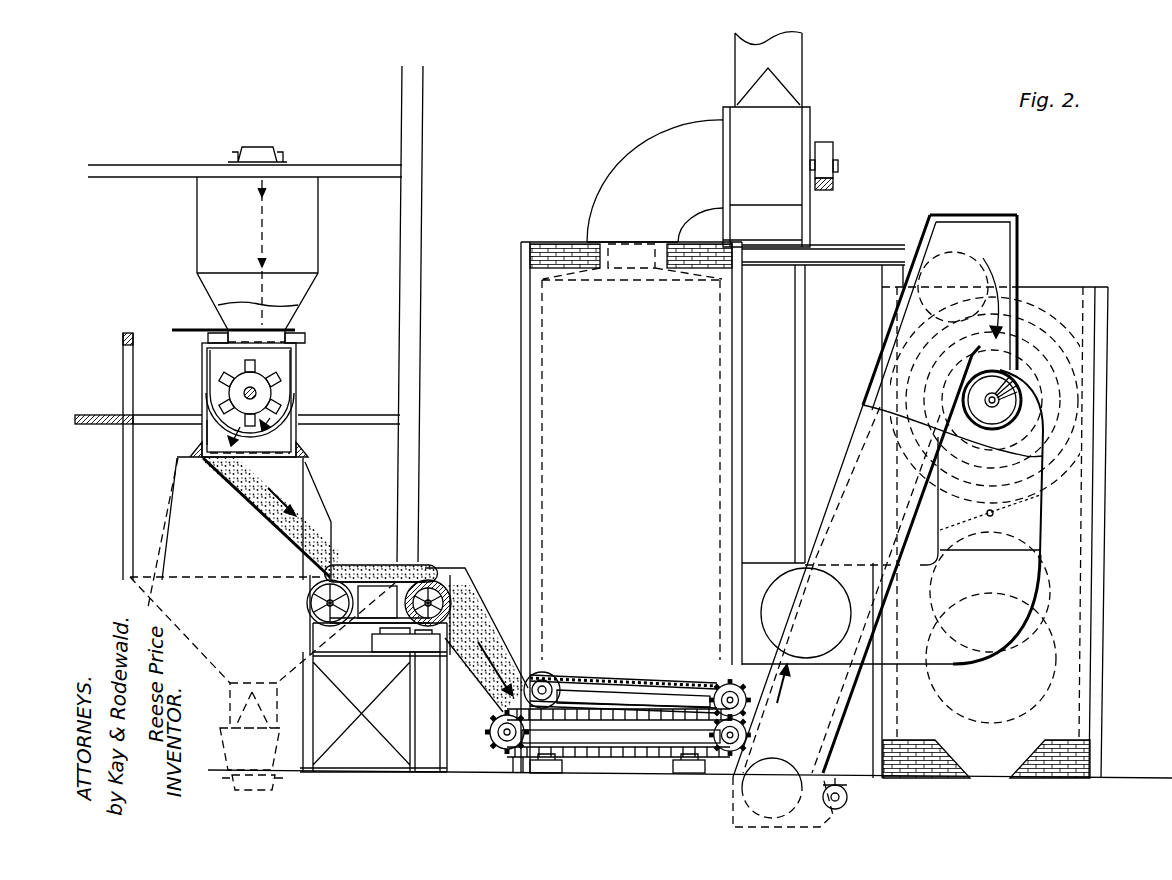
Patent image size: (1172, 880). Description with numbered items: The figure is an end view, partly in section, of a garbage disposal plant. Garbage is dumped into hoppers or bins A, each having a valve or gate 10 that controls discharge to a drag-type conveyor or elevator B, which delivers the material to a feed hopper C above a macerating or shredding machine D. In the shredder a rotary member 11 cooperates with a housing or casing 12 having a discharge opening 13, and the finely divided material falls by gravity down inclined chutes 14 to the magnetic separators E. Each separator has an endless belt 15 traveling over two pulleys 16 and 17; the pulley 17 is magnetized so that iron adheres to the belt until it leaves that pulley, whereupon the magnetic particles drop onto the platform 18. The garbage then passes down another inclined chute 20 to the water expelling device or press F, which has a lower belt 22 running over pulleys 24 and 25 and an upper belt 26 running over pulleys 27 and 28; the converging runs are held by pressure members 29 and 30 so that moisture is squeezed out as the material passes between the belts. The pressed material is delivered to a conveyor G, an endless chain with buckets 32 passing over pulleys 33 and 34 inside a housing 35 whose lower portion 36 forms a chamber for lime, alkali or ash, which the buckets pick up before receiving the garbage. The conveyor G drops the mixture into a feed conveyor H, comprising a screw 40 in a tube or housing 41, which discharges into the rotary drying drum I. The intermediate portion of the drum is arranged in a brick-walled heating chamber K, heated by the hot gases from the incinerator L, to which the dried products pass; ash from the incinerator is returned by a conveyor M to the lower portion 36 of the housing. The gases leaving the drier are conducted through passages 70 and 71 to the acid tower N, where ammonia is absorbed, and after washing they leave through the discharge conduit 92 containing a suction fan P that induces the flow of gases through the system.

The conveyor or elevator B is at (263, 155).
The feed hopper C is at (318, 250).
The macerating or shredding machine D is at (285, 365).
The rotary member 11 is at (262, 392).
The housing or casing 12 is at (267, 433).
The discharge opening 13 is at (237, 422).
The inclined chute 14 is at (270, 524).
The hopper or bin A is at (147, 607).
The magnetic separator E is at (355, 557).
The endless belt 15 is at (408, 568).
The wheel or pulley 16 is at (307, 603).
The magnetized pulley 17 is at (465, 568).
The platform 18 is at (372, 650).
The valve or gate 10 is at (243, 698).
The inclined chute 20 is at (474, 688).
The pulley 27 is at (545, 681).
The upper belt 26 is at (560, 677).
The water expelling device or press F is at (637, 673).
The converging plate or pressure member 30 is at (623, 698).
The pulley 28 is at (725, 690).
The converging plate or pressure member 29 is at (618, 733).
The pulley 24 is at (507, 748).
The lower belt 22 is at (612, 752).
The pulley 25 is at (728, 750).
The lower portion of housing 36 is at (733, 815).
The conveyor or elevator G is at (762, 722).
The bucket 32 is at (790, 650).
The pulley 33 is at (790, 764).
The conduit or passage 71 is at (806, 613).
The housing 35 is at (875, 496).
The conveyor M is at (848, 797).
The discharge conduit 92 is at (655, 181).
The suction fan P is at (780, 139).
The acid tower N is at (737, 507).
The pulley 34 is at (957, 250).
The tube or housing 41 is at (1000, 397).
The feed conveyor H is at (1021, 408).
The screw 40 is at (1010, 450).
The rotary drying kiln or drum I is at (1048, 462).
The conduit or passage 70 is at (988, 512).
The heating chamber K is at (1075, 535).
The incinerator L is at (991, 627).